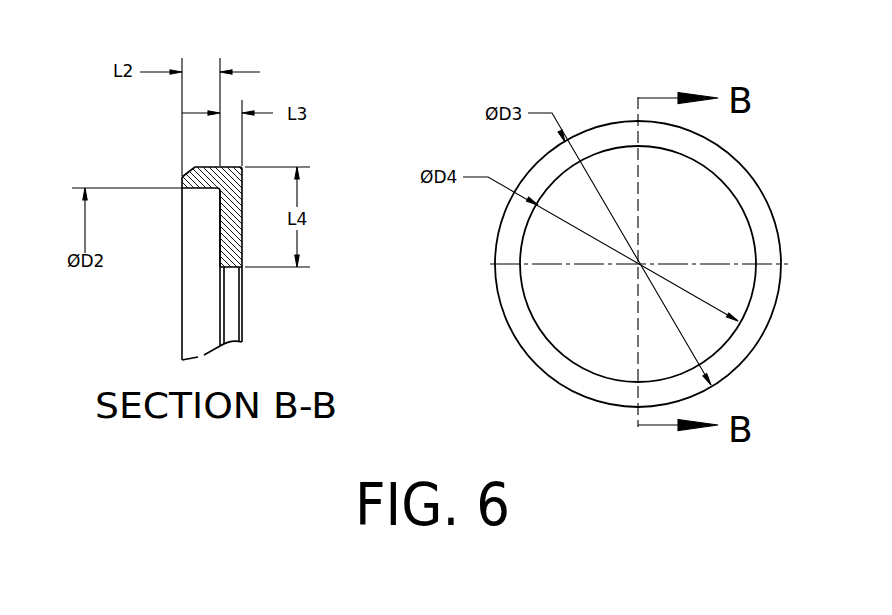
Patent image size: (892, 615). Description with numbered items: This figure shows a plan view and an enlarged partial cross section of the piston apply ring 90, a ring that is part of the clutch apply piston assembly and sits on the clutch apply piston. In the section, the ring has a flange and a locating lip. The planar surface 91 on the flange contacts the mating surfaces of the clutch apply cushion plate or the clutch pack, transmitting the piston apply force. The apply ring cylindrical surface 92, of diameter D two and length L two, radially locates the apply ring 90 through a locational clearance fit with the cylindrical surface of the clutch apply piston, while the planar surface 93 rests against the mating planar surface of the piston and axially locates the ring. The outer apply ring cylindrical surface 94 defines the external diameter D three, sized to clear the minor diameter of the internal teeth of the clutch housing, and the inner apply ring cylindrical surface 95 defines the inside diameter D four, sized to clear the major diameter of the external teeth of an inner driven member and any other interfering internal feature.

The piston apply ring 90 is at (528, 355).
The planar surface 91 is at (245, 208).
The apply ring cylindrical surface 92 is at (200, 188).
The planar surface 93 is at (220, 227).
The apply ring cylindrical surface 94 is at (210, 167).
The apply ring cylindrical surface 95 is at (230, 268).